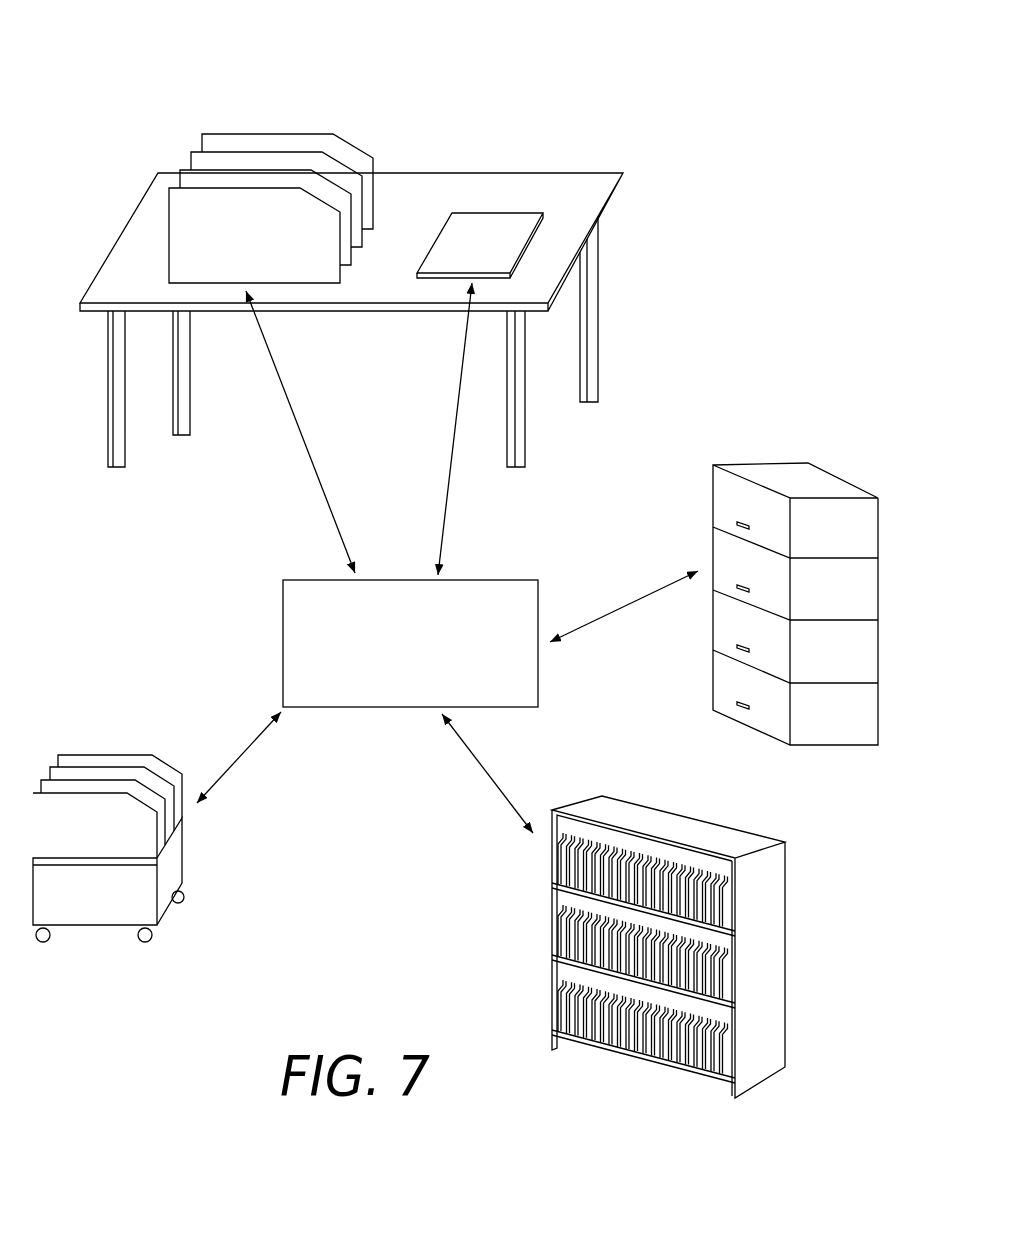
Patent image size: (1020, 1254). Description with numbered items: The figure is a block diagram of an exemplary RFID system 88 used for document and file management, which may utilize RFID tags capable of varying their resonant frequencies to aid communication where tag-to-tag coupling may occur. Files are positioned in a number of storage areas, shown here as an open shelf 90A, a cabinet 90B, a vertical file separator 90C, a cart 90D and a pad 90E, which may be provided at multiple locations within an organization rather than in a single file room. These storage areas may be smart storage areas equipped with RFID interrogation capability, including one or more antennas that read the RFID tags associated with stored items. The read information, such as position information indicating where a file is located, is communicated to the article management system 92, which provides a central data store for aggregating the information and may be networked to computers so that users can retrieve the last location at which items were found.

The RFID system 88 is at (491, 69).
The article management system 92 is at (397, 697).
The open shelf 90A is at (770, 960).
The cabinet 90B is at (782, 477).
The vertical file separator 90C is at (183, 220).
The cart 90D is at (173, 867).
The pad 90E is at (473, 210).